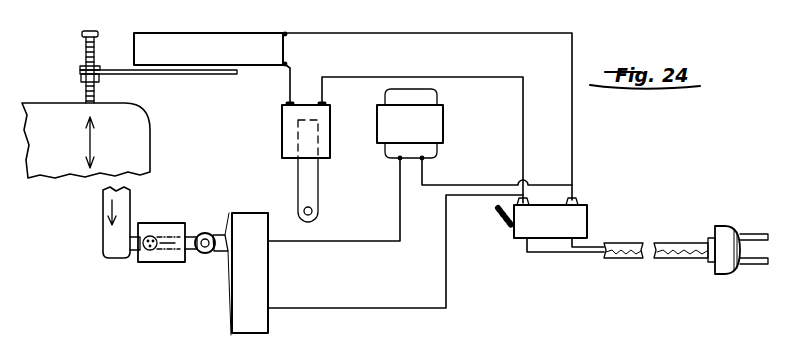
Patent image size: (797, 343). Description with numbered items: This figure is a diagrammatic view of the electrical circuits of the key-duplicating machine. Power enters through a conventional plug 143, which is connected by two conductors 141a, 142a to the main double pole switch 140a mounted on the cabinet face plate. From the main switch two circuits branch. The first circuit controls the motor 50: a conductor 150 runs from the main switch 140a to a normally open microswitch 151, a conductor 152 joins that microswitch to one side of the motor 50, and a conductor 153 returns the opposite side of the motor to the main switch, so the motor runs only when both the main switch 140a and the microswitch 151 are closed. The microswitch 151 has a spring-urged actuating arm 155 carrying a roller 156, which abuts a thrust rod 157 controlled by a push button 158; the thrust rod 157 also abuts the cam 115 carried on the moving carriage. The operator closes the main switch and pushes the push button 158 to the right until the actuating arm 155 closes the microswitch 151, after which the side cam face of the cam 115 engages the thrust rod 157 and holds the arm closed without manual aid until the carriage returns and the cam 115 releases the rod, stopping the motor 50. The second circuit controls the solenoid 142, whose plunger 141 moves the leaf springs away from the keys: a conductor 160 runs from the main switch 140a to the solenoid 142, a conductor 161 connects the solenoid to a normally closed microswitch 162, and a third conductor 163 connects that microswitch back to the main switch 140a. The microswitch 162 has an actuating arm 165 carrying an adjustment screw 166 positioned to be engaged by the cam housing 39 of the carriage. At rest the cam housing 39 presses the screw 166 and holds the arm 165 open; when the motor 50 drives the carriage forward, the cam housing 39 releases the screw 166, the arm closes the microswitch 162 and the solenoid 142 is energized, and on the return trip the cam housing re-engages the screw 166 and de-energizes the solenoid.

The cam housing 39 is at (135, 140).
The motor 50 is at (435, 128).
The cam 115 is at (104, 238).
The double pole switch 140a is at (523, 230).
The plunger 141 is at (317, 196).
The conductor 141a is at (594, 243).
The solenoid 142 is at (283, 142).
The conductor 142a is at (586, 255).
The plug 143 is at (726, 236).
The conductor 150 is at (290, 309).
The microswitch 151 is at (244, 298).
The conductor 152 is at (400, 197).
The conductor 153 is at (425, 178).
The actuating arm 155 is at (222, 252).
The roller 156 is at (206, 232).
The thrust rod 157 is at (194, 232).
The push button 158 is at (150, 255).
The conductor 160 is at (524, 146).
The conductor 161 is at (288, 88).
The microswitch 162 is at (167, 26).
The conductor 163 is at (574, 137).
The actuating arm 165 is at (153, 75).
The adjustment screw 166 is at (84, 52).